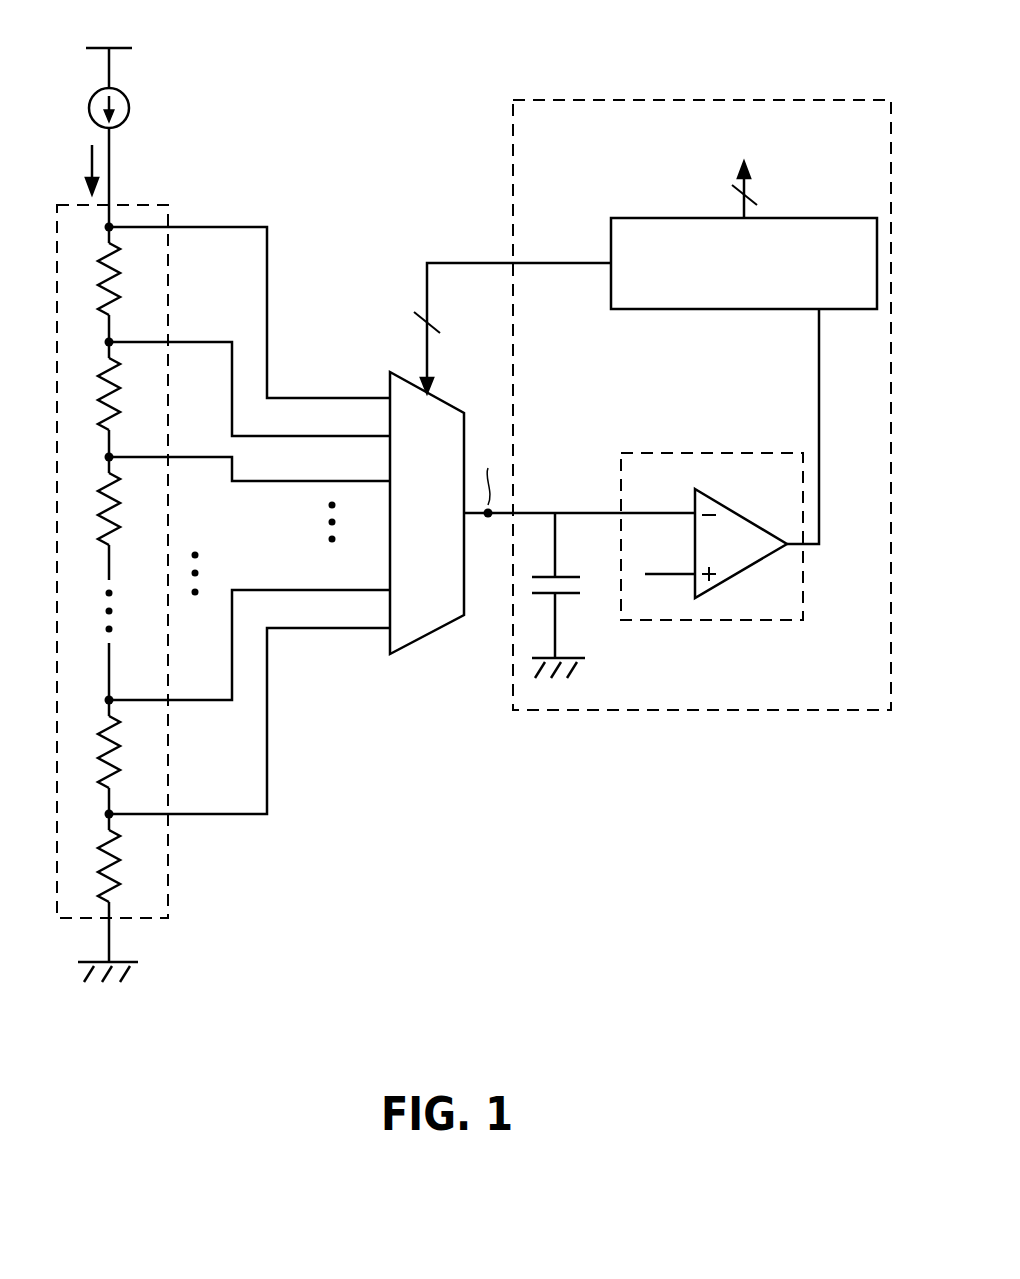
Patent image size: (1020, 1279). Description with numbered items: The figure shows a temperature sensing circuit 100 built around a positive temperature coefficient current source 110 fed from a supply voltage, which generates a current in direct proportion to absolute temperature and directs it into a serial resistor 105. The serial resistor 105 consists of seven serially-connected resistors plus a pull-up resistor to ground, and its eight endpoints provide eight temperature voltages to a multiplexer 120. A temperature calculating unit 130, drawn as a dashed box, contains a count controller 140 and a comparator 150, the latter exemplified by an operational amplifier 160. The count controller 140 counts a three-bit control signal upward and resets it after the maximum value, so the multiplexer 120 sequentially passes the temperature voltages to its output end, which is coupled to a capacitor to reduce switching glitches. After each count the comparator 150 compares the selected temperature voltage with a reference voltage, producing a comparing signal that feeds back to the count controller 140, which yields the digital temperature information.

The temperature sensing circuit 100 is at (823, 1024).
The serial resistor 105 is at (143, 205).
The positive temperature coefficient current source 110 is at (129, 108).
The multiplexer 120 is at (424, 635).
The temperature calculating unit 130 is at (803, 100).
The count controller 140 is at (803, 218).
The comparator 150 is at (710, 453).
The operational amplifier 160 is at (745, 519).